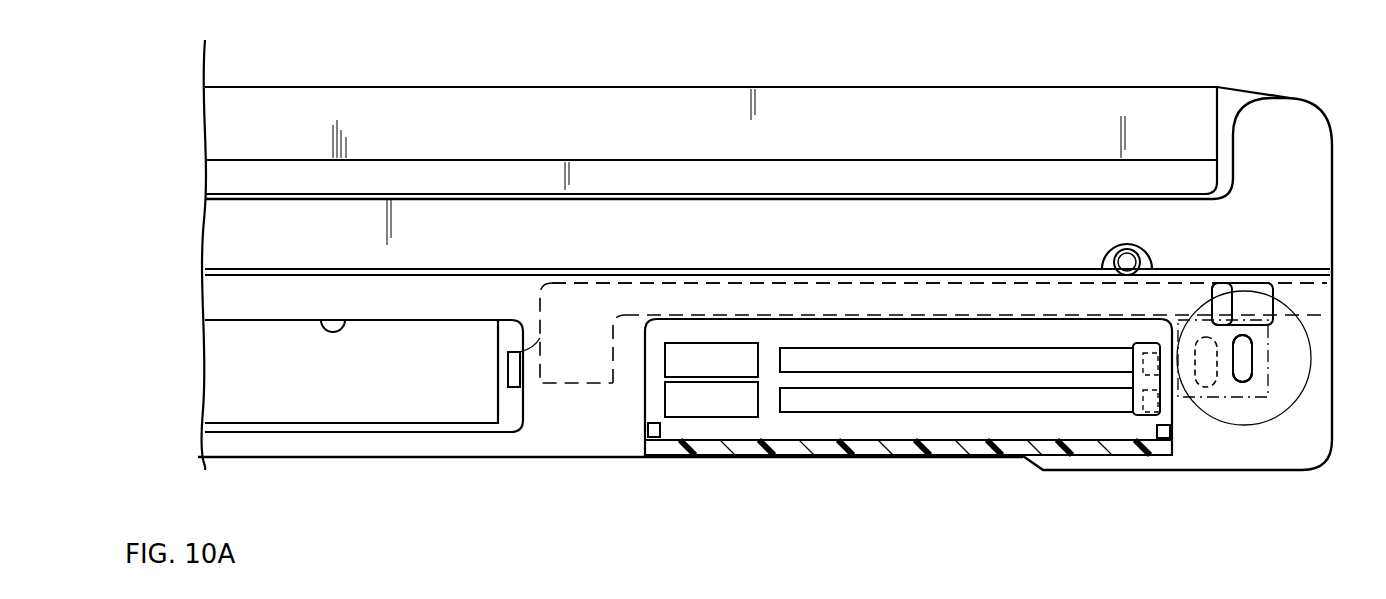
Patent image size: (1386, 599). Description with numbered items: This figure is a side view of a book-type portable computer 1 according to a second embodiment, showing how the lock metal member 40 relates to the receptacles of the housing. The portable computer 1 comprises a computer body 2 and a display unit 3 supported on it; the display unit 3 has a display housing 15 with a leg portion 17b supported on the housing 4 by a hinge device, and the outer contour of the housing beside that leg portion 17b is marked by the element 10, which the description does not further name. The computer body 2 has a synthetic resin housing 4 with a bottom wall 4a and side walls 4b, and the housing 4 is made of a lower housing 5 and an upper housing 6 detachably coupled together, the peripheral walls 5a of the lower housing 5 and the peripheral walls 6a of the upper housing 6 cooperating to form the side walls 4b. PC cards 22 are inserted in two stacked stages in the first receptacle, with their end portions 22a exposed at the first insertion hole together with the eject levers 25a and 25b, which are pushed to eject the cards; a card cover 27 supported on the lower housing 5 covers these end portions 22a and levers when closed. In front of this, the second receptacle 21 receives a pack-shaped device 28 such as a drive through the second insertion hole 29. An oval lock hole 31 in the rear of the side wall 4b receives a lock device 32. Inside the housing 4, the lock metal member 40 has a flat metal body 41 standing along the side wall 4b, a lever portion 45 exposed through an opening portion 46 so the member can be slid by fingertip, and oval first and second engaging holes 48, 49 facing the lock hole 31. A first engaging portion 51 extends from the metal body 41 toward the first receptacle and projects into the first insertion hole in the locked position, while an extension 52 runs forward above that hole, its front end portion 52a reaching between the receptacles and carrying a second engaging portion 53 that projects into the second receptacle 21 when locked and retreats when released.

The portable computer 1 is at (1050, 73).
The computer body 2 is at (275, 210).
The display unit 3 is at (380, 110).
The housing 4 is at (150, 213).
The bottom wall 4a is at (347, 457).
The side wall 4b is at (688, 293).
The lower housing 5 is at (216, 305).
The peripheral walls of lower housing 5a is at (813, 293).
The upper housing 6 is at (216, 246).
The peripheral walls of upper housing 6a is at (640, 205).
The housing outer wall 10 is at (1282, 120).
The display housing 15 is at (530, 100).
The leg portion 17b is at (1232, 105).
The second receptacle 21 is at (400, 428).
The PC cards 22 is at (1023, 388).
The end portions of PC cards 22a is at (953, 363).
The eject lever 25a is at (670, 355).
The eject lever 25b is at (700, 405).
The card cover 27 is at (797, 447).
The pack-shaped device 28 is at (287, 412).
The second insertion hole 29 is at (335, 323).
The lock hole 31 is at (1243, 377).
The lock device 32 is at (1294, 313).
The lock metal member 40 is at (1275, 348).
The metal body 41 is at (1235, 392).
The lever portion 45 is at (1220, 290).
The opening portion 46 is at (1255, 288).
The first engaging hole 48 is at (1247, 368).
The second engaging hole 49 is at (1188, 398).
The first engaging portion 51 is at (1137, 402).
The extension 52 is at (880, 295).
The front end portion of extension 52a is at (577, 382).
The second engaging portion 53 is at (508, 372).